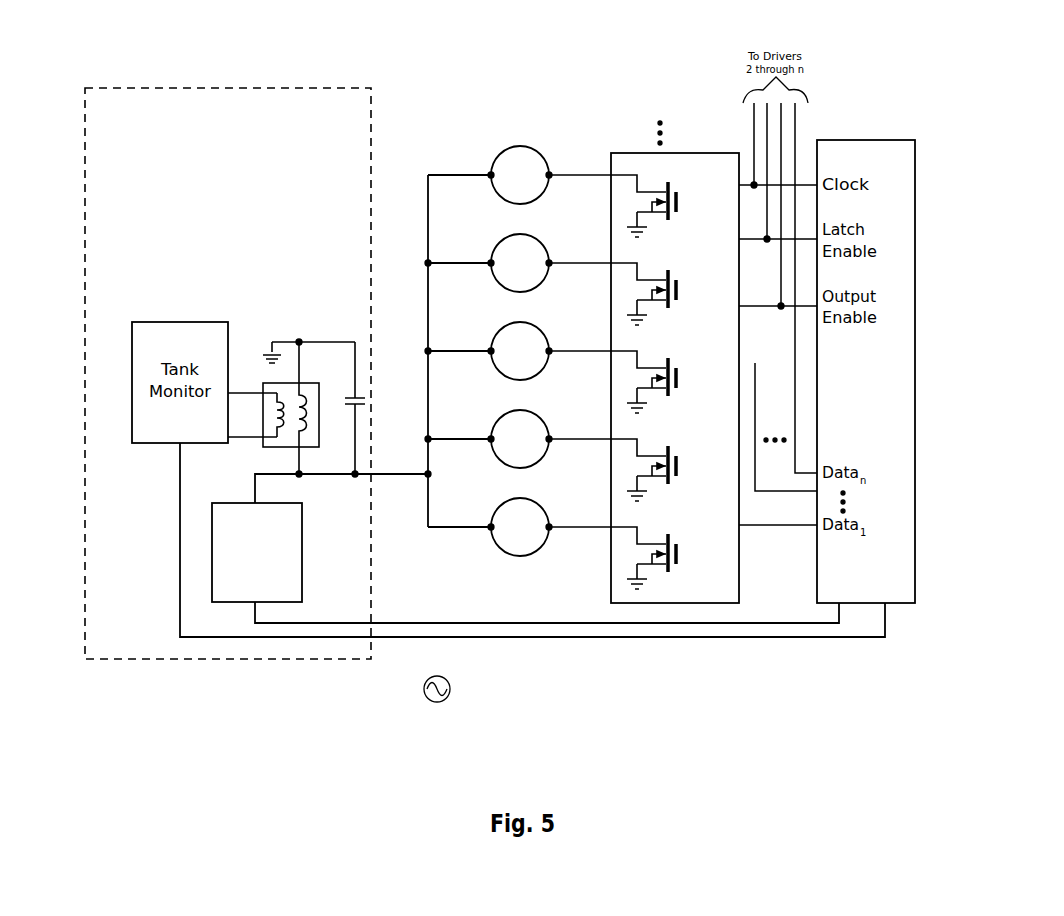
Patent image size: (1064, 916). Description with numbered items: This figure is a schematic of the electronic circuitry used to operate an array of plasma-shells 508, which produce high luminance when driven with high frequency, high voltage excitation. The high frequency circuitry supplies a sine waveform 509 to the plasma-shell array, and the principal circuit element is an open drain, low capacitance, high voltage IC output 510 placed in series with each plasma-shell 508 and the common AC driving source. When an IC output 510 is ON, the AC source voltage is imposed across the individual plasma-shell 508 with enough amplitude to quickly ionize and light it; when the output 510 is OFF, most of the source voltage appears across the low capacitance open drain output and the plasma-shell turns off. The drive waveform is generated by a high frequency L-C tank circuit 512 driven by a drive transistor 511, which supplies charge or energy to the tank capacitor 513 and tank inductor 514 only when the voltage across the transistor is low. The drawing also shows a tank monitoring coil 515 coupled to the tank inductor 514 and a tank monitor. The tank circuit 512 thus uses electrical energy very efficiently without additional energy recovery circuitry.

The plasma-shells 508 is at (528, 148).
The sine waveform 509 is at (389, 482).
The IC output 510 is at (725, 150).
The drive transistor 511 is at (235, 583).
The tank circuit 512 is at (168, 88).
The tank capacitor 513 is at (350, 383).
The tank inductor 514 is at (295, 392).
The Tank monitoring coil 515 is at (267, 390).